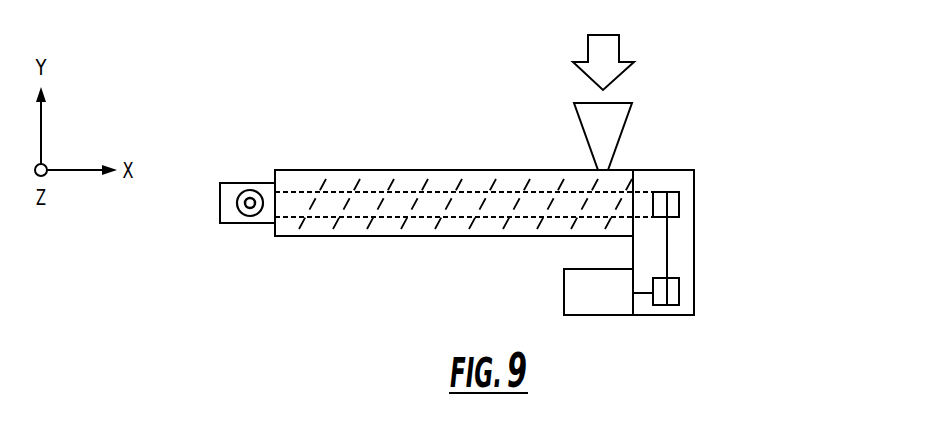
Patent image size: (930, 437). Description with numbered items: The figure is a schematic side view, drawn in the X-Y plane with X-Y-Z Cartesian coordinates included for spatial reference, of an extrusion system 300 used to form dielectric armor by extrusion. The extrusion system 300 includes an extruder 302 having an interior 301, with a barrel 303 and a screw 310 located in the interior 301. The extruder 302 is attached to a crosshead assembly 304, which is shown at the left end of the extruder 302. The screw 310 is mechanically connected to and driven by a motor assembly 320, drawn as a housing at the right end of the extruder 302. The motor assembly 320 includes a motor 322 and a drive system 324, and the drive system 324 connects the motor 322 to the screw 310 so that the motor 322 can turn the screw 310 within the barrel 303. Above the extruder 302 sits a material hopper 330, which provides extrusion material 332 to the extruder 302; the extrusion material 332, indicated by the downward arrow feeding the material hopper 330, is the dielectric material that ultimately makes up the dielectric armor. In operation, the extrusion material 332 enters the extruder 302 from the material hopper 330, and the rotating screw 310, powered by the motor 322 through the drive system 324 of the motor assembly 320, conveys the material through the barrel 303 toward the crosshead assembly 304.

The extrusion system 300 is at (271, 127).
The interior 301 is at (307, 182).
The extruder 302 is at (432, 163).
The barrel 303 is at (475, 177).
The crosshead assembly 304 is at (242, 177).
The screw 310 is at (459, 228).
The motor assembly 320 is at (708, 213).
The motor 322 is at (618, 305).
The drive system 324 is at (690, 250).
The material hopper 330 is at (627, 120).
The extrusion material 332 is at (613, 45).